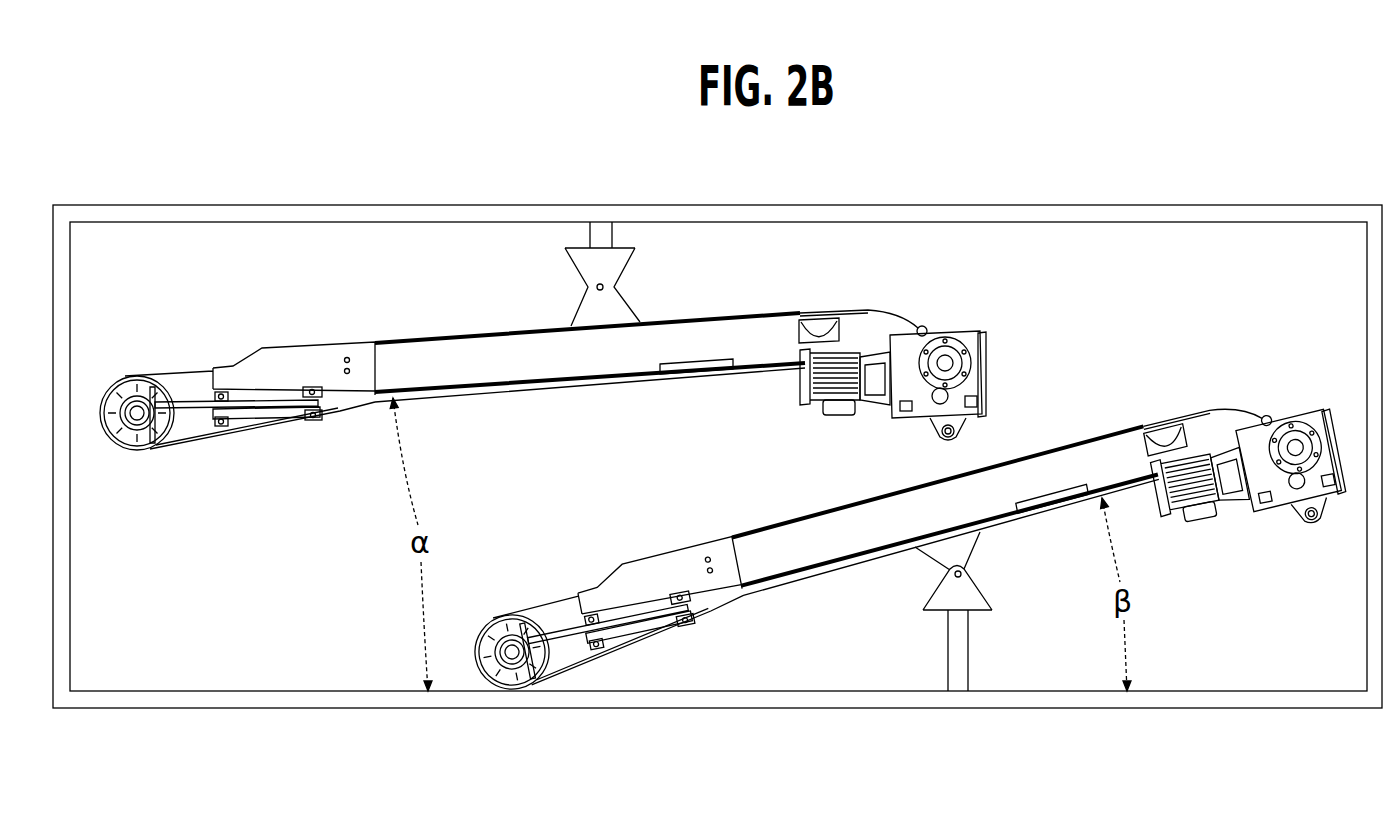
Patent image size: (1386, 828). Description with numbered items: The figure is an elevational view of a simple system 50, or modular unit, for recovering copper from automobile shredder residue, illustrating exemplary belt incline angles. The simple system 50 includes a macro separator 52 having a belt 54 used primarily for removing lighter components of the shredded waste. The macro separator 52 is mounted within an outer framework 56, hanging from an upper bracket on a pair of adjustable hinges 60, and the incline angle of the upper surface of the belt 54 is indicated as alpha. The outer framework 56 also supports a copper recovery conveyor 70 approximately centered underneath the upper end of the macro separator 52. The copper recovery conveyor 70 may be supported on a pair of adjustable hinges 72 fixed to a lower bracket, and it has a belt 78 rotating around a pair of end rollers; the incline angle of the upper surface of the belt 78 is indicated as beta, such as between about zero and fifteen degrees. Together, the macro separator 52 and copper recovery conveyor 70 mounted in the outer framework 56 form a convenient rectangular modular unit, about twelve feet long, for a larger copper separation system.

The simple system 50 is at (222, 100).
The macro separator 52 is at (940, 306).
The belt 54 is at (190, 372).
The outer framework 56 is at (362, 203).
The adjustable hinges 60 is at (570, 262).
The copper recovery conveyor 70 is at (1218, 400).
The adjustable hinges 72 is at (947, 604).
The belt 78 is at (547, 598).